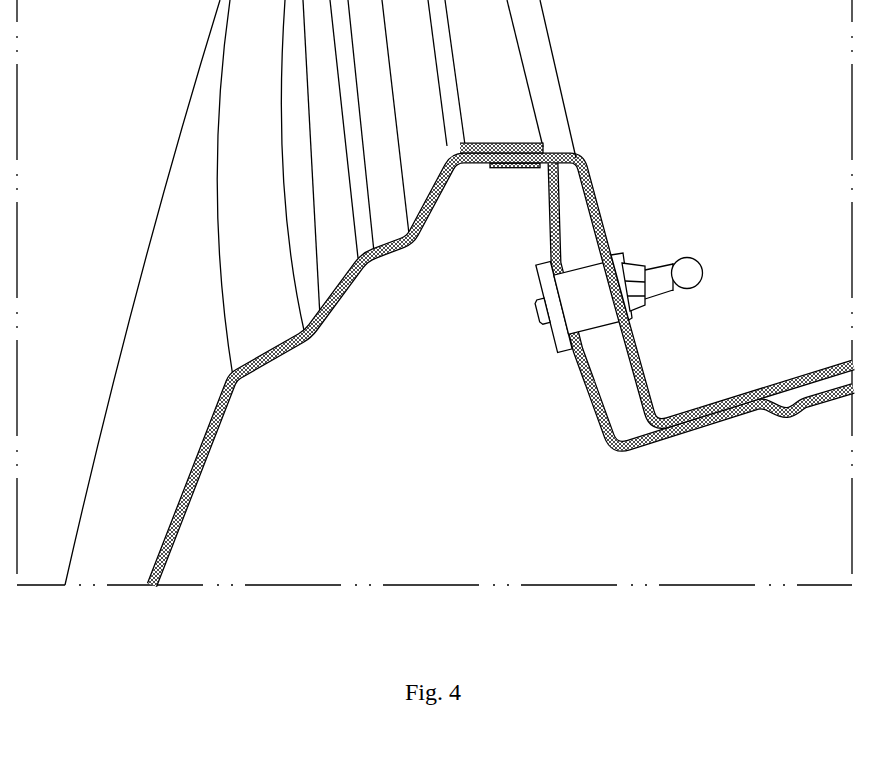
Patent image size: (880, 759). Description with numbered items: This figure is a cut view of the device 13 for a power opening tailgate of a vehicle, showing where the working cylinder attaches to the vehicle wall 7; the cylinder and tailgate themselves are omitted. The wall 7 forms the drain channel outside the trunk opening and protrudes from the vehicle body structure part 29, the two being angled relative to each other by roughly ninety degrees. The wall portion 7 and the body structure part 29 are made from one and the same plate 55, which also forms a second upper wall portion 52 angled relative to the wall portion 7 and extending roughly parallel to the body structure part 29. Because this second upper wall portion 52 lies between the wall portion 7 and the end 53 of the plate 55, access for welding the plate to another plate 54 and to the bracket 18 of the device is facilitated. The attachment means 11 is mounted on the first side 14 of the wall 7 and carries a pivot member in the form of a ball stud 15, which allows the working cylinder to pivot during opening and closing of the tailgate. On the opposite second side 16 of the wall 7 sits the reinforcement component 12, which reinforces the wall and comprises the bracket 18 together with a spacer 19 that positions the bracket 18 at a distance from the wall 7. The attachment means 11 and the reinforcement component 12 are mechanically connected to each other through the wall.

The vehicle wall 7 is at (637, 376).
The attachment means 11 is at (689, 226).
The reinforcement component 12 is at (539, 354).
The device 13 is at (504, 327).
The first side 14 is at (619, 203).
The pivot member 15 is at (690, 272).
The second side 16 is at (613, 375).
The bracket 18 is at (607, 443).
The spacer 19 is at (587, 293).
The vehicle body structure part 29 is at (778, 383).
The second upper wall portion 52 is at (543, 146).
The end of the plate 53 is at (467, 180).
The another plate 54 is at (507, 143).
The plate 55 is at (590, 180).